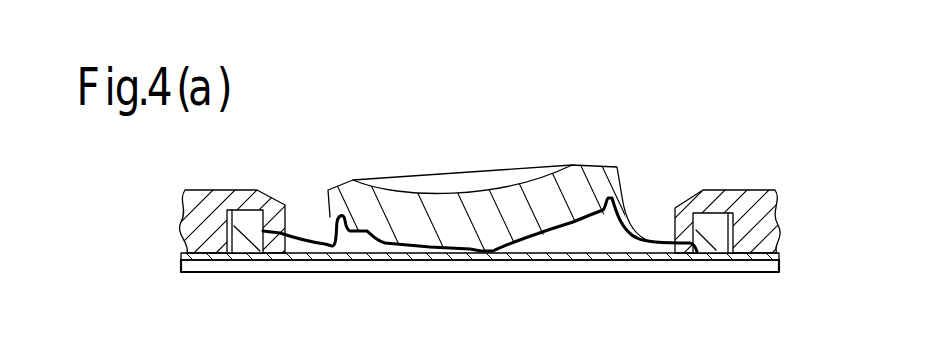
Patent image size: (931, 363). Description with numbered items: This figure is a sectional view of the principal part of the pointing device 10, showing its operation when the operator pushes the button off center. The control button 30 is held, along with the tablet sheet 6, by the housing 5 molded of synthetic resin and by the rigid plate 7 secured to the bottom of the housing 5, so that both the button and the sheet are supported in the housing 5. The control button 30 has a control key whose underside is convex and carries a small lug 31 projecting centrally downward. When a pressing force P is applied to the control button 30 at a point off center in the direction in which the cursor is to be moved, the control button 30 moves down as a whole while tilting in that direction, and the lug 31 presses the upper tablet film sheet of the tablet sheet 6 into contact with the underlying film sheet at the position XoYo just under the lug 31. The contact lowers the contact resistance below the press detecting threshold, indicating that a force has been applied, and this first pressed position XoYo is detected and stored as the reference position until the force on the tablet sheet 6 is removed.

The pointing device 10 is at (573, 120).
The housing 5 is at (752, 200).
The tablet sheet 6 is at (666, 258).
The rigid plate 7 is at (716, 265).
The control button 30 is at (583, 175).
The lug 31 is at (501, 255).
The pressing force P is at (422, 152).
The pressed position (x0,y0) XoYo is at (405, 306).